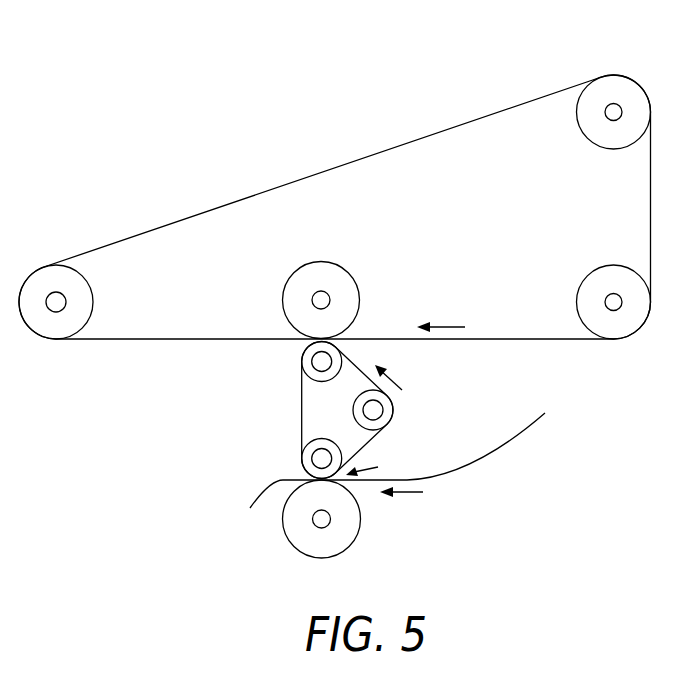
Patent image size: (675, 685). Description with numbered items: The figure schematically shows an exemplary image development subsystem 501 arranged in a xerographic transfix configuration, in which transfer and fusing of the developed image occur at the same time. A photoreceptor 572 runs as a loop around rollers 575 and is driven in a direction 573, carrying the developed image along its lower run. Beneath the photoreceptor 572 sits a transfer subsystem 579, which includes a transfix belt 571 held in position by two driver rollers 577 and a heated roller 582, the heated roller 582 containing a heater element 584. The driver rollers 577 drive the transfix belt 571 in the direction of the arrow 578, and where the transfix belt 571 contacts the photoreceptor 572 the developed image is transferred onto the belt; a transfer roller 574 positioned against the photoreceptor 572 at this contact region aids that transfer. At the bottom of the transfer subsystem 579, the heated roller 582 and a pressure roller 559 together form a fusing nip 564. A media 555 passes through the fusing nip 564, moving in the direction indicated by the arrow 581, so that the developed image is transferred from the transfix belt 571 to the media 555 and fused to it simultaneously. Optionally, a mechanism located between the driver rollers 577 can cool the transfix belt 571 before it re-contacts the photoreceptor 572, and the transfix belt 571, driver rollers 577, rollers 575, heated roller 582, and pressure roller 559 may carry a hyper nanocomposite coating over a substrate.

The image development subsystem 501 is at (218, 97).
The photoreceptor 572 is at (176, 341).
The rollers 575 is at (92, 296).
The transfer roller 574 is at (338, 268).
The direction 573 is at (443, 327).
The transfix belt 571 is at (301, 396).
The driver rollers 577 is at (301, 359).
The heated roller 582 is at (312, 473).
The heater element 584 is at (320, 446).
The arrow 578 is at (393, 378).
The transfer subsystem 579 is at (484, 385).
The fusing nip 564 is at (376, 463).
The media 555 is at (495, 452).
The web travel direction 581 is at (403, 494).
The pressure roller 559 is at (322, 558).